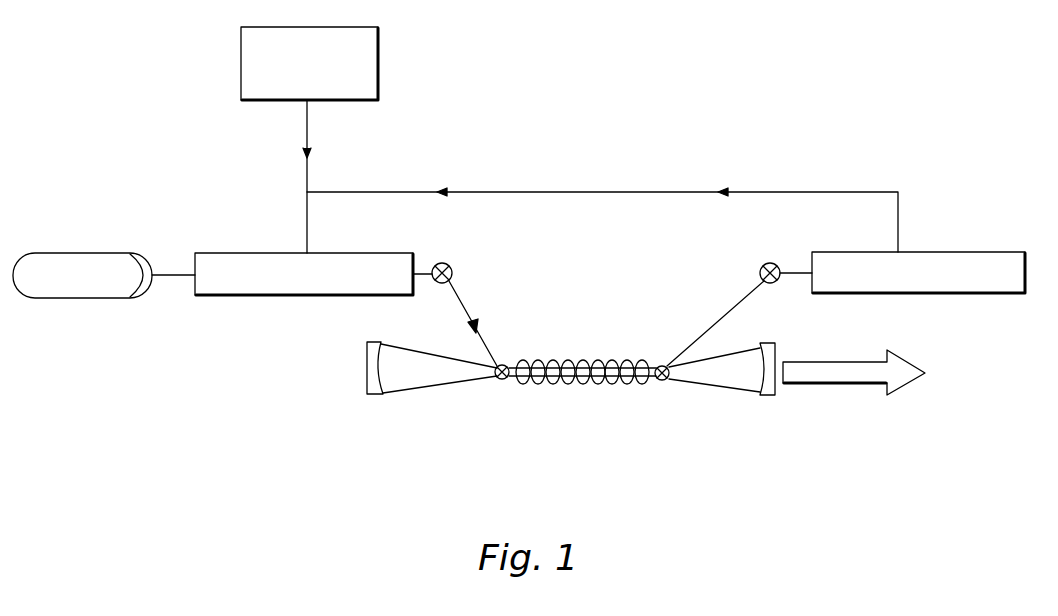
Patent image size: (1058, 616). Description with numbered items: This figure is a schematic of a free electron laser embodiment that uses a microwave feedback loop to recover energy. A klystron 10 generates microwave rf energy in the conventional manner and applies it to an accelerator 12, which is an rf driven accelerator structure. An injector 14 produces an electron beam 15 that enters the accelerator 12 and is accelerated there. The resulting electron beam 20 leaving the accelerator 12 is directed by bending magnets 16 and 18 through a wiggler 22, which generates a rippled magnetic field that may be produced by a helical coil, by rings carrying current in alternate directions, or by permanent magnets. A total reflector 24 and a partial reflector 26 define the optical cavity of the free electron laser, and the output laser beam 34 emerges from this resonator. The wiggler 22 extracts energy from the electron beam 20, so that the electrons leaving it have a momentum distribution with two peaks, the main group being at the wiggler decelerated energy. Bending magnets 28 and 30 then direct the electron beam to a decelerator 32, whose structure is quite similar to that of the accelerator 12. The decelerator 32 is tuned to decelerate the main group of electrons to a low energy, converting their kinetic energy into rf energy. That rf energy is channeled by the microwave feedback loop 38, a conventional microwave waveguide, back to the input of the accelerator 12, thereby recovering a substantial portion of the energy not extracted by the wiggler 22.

The klystron 10 is at (378, 42).
The accelerator 12 is at (250, 253).
The injector 14 is at (48, 299).
The electron beam 15 is at (175, 276).
The bending magnet 16 is at (450, 265).
The bending magnet 18 is at (506, 364).
The electron beam 20 is at (457, 300).
The wiggler 22 is at (548, 385).
The total reflector 24 is at (362, 398).
The partial reflector 26 is at (775, 396).
The bending magnet 28 is at (665, 380).
The bending magnet 30 is at (762, 265).
The decelerator 32 is at (935, 252).
The output laser beam 34 is at (912, 382).
The microwave feedback loop 38 is at (600, 192).